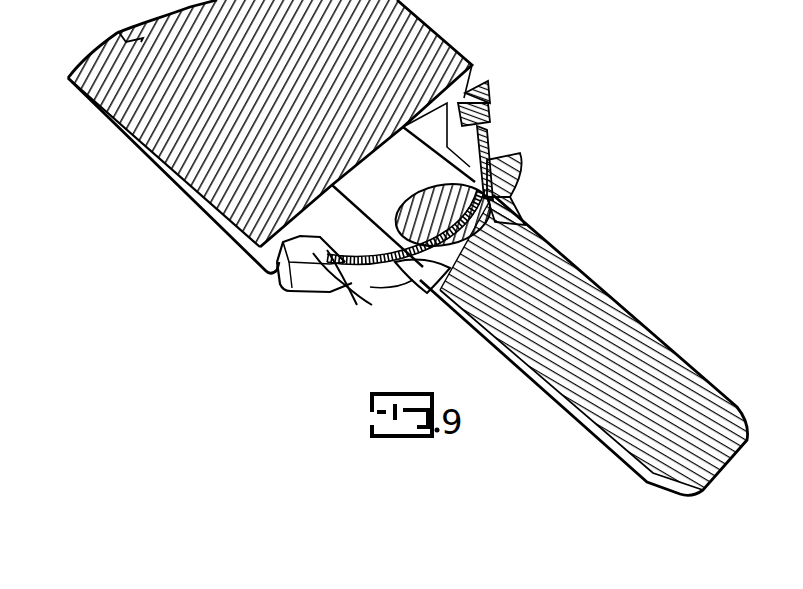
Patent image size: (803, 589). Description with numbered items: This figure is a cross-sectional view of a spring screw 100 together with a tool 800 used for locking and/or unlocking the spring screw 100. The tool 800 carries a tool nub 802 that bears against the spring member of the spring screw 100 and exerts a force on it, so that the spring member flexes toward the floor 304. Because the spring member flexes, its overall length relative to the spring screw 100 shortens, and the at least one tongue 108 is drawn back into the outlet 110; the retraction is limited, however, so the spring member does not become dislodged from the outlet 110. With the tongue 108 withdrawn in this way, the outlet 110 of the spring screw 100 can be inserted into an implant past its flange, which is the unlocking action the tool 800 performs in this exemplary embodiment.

The tool 800 is at (461, 41).
The tongue 108 is at (492, 135).
The tool nub 802 is at (507, 195).
The spring screw 100 is at (617, 286).
The outlet 110 is at (337, 287).
The floor 304 is at (428, 292).